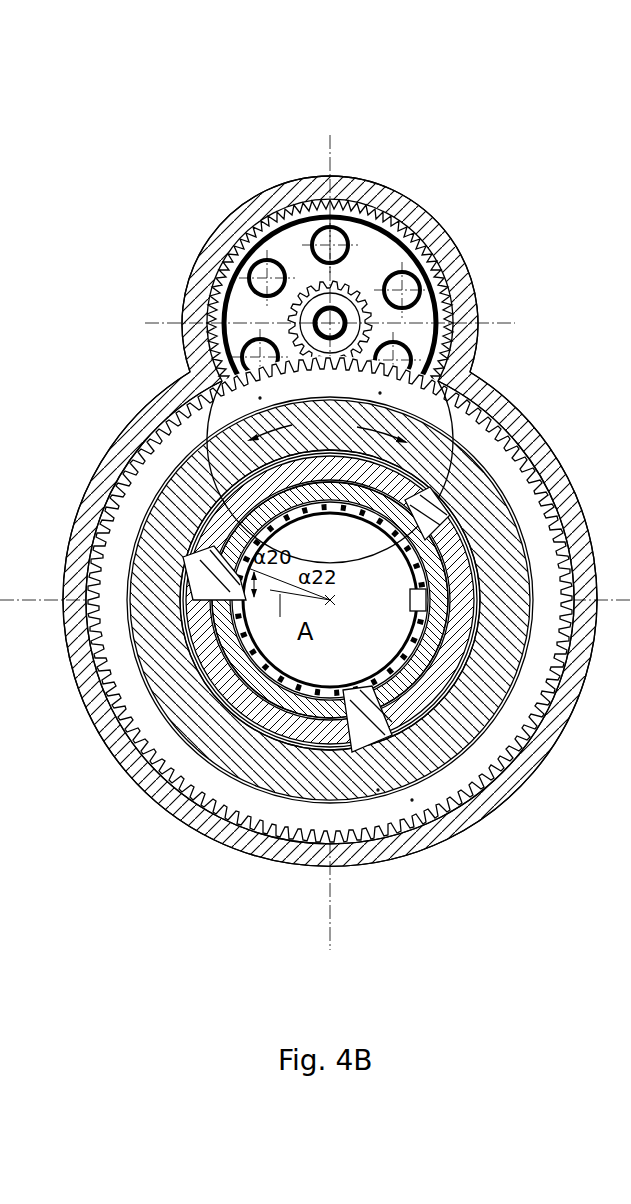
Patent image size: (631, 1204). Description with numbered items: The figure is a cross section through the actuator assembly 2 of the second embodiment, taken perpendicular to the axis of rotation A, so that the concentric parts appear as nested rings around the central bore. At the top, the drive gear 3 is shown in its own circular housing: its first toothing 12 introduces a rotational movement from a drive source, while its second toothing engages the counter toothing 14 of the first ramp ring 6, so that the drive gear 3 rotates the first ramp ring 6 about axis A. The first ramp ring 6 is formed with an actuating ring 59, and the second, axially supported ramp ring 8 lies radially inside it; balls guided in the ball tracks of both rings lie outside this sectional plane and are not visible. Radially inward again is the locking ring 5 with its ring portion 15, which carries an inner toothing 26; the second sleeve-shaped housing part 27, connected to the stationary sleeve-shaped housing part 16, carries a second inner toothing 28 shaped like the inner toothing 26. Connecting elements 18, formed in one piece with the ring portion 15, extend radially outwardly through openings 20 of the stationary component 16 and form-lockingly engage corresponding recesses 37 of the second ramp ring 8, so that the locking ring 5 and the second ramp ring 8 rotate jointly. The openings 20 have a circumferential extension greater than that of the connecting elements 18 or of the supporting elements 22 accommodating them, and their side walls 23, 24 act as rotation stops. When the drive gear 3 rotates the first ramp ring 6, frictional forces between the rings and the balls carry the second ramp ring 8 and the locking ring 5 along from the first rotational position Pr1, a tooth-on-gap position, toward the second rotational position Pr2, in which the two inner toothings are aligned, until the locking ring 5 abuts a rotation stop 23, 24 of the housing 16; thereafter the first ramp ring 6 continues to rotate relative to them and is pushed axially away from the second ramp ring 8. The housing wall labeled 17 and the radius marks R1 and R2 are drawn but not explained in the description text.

The actuator assembly 2 is at (300, 182).
The drive gear 3 is at (387, 253).
The locking ring 5 is at (145, 783).
The first ramp ring 6 is at (500, 743).
The second ramp ring 8 is at (503, 507).
The first toothing 12 is at (383, 213).
The counter toothing 14 is at (517, 775).
The ring portion 15 is at (272, 770).
The stationary component 16 is at (175, 808).
The housing wall 17 is at (439, 217).
The connecting elements 18 is at (496, 458).
The openings 20 is at (462, 805).
The supporting elements 22 is at (457, 527).
The side wall 23 is at (340, 800).
The side wall 24 is at (430, 403).
The inner toothing 26 is at (415, 592).
The second sleeve-shaped housing part 27 is at (302, 800).
The second inner toothing 28 is at (393, 680).
The recesses 37 is at (180, 560).
The actuating ring 59 is at (413, 473).
The radius R1 is at (260, 396).
The radius R2 is at (380, 391).
The first rotational position Pr1 is at (378, 790).
The second rotational position Pr2 is at (412, 800).